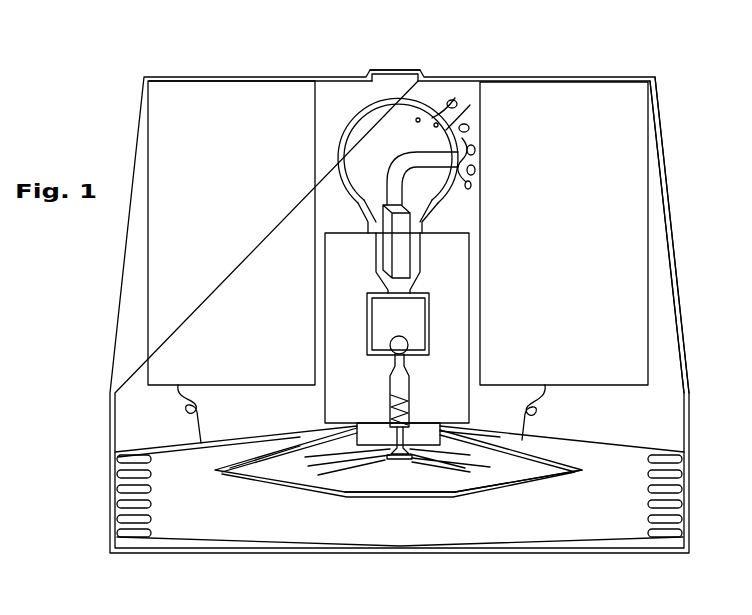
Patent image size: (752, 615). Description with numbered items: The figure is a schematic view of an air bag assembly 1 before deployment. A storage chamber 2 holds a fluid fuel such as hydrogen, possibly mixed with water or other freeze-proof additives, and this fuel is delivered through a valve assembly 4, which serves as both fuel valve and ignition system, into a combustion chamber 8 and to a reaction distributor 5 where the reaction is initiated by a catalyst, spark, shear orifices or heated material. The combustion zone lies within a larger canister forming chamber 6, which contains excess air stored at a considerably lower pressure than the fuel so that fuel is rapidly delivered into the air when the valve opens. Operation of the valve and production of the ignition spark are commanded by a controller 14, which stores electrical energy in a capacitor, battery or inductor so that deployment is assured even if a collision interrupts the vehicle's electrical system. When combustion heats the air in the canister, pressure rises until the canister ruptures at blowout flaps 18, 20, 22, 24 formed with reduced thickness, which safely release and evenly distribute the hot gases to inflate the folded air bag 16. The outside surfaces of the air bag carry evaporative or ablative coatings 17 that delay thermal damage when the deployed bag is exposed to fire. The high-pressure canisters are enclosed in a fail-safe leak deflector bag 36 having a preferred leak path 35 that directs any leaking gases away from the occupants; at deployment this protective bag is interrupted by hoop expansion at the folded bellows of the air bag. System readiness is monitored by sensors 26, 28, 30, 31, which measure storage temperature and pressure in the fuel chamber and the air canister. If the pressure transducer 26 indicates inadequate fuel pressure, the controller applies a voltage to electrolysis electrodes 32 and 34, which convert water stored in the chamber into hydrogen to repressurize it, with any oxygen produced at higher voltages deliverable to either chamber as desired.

The air bag assembly 1 is at (276, 37).
The chamber 2 is at (366, 105).
The valve assembly 4 is at (325, 393).
The reaction distributor 5 is at (480, 480).
The chamber (canister) 6 is at (268, 454).
The combustion chamber 8 is at (467, 460).
The controller 14 is at (640, 163).
The air bag 16 is at (642, 450).
The evaporative or ablative coatings 17 is at (657, 548).
The blowout flap 18 is at (308, 470).
The blowout flap 20 is at (376, 485).
The blowout flap 22 is at (400, 484).
The blowout flap 24 is at (420, 483).
The pressure transducer 26 is at (455, 98).
The sensor 28 is at (430, 113).
The sensor 30 is at (522, 457).
The sensor 31 is at (203, 442).
The electrolysis electrode 32 is at (354, 190).
The electrolysis electrode 34 is at (410, 227).
The leak path 35 is at (408, 70).
The leak deflector bag 36 is at (673, 275).